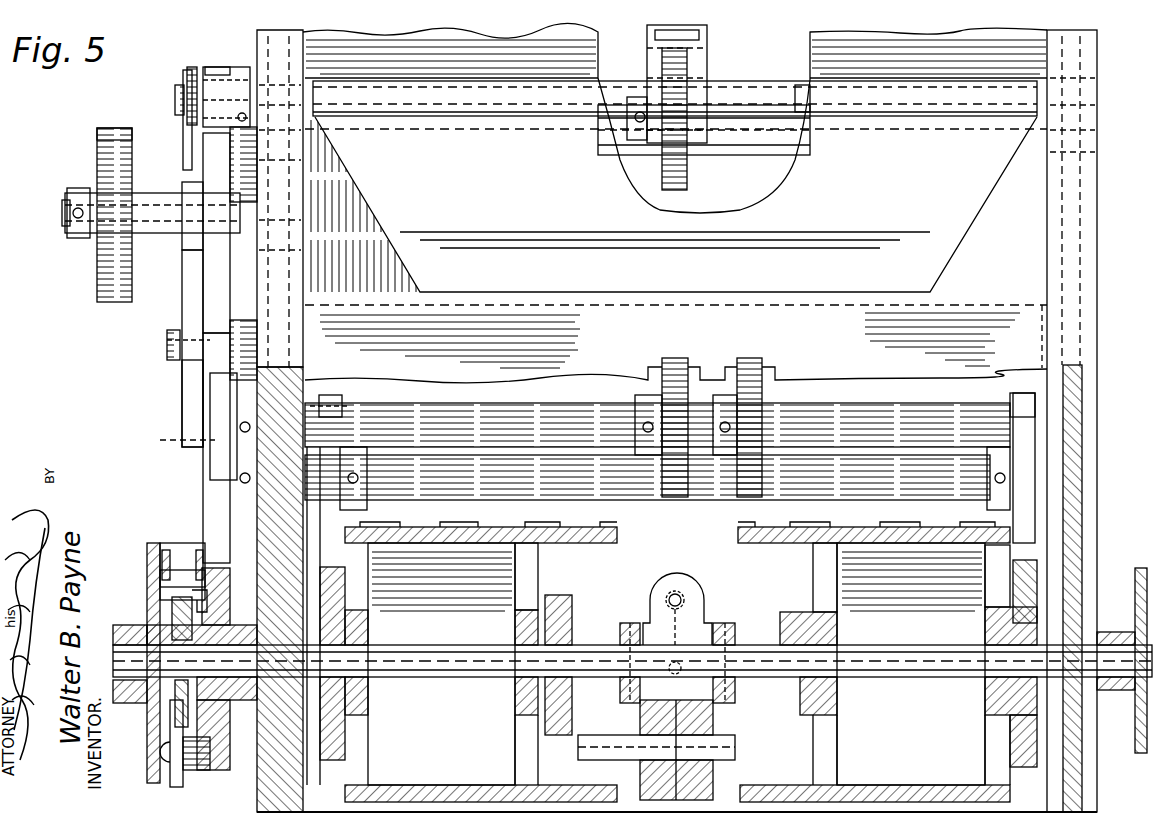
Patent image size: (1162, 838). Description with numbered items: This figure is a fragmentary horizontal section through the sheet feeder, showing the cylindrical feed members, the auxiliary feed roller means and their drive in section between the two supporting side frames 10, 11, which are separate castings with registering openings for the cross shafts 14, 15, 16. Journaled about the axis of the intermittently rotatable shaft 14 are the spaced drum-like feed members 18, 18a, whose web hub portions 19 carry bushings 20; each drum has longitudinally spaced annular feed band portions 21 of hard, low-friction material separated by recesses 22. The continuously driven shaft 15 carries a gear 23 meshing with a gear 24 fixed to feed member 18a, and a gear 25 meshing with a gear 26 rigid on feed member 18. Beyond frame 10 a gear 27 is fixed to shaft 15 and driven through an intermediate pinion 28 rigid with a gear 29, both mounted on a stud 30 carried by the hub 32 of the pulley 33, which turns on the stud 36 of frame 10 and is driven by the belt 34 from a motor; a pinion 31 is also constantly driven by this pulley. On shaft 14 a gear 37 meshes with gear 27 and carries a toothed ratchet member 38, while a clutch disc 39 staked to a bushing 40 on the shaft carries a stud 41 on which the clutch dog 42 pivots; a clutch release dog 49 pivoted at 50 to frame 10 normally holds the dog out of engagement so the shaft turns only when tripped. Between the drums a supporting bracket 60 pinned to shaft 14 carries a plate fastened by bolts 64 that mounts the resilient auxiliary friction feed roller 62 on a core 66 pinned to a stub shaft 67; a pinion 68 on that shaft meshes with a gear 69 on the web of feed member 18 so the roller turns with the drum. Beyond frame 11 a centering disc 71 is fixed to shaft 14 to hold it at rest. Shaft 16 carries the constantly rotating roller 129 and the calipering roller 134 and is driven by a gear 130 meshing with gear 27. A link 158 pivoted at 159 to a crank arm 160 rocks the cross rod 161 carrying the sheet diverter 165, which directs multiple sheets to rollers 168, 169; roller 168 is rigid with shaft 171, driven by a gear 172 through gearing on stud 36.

The supporting side frame 10 is at (258, 795).
The supporting side frame 11 is at (1090, 58).
The cross shaft 14 is at (503, 676).
The cross shaft 15 is at (475, 475).
The cross shaft 16 is at (540, 418).
The feed member 18 is at (441, 664).
The feed member 18a is at (911, 664).
The hub portion 19 is at (515, 625).
The bushing 20 is at (370, 640).
The feed band portion 21 is at (985, 524).
The recess 22 is at (935, 530).
The gear 23 is at (1030, 527).
The gear 24 is at (1037, 575).
The gear 25 is at (342, 404).
The gear 26 is at (335, 760).
The gear 27 is at (210, 508).
The intermediate pinion 28 is at (213, 305).
The gear 29 is at (185, 384).
The stud 30 is at (200, 320).
The pinion 31 is at (182, 185).
The hub 32 is at (160, 238).
The pulley 33 is at (97, 148).
The belt 34 is at (105, 128).
The stud 36 is at (145, 200).
The gear 37 is at (210, 567).
The toothed ratchet member 38 is at (176, 705).
The clutch disc 39 is at (147, 778).
The bushing 40 is at (125, 625).
The stud 41 is at (147, 560).
The clutch dog 42 is at (170, 560).
The clutch release dog 49 is at (172, 725).
The pivot 50 is at (165, 755).
The supporting bracket 60 is at (677, 573).
The auxiliary friction feed roller 62 is at (713, 790).
The bolt 64 is at (672, 610).
The core 66 is at (715, 718).
The stub shaft 67 is at (735, 744).
The pinion 68 is at (575, 728).
The gear 69 is at (572, 612).
The centering disc 71 is at (1141, 753).
The roller 129 is at (750, 358).
The gear 130 is at (215, 420).
The roller 134 is at (673, 358).
The link 158 is at (183, 147).
The pivot 159 is at (180, 90).
The crank arm 160 is at (192, 67).
The cross rod 161 is at (322, 95).
The sheet diverter 165 is at (994, 183).
The roller 168 is at (688, 185).
The roller 169 is at (707, 48).
The shaft 171 is at (780, 128).
The gear 172 is at (222, 67).